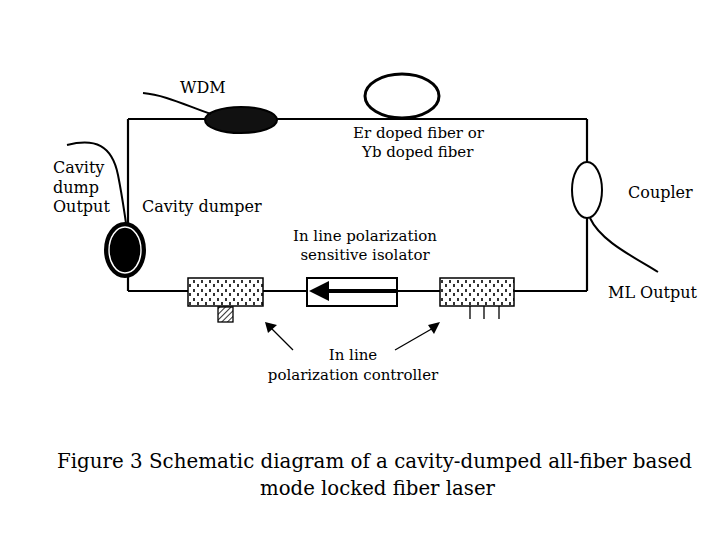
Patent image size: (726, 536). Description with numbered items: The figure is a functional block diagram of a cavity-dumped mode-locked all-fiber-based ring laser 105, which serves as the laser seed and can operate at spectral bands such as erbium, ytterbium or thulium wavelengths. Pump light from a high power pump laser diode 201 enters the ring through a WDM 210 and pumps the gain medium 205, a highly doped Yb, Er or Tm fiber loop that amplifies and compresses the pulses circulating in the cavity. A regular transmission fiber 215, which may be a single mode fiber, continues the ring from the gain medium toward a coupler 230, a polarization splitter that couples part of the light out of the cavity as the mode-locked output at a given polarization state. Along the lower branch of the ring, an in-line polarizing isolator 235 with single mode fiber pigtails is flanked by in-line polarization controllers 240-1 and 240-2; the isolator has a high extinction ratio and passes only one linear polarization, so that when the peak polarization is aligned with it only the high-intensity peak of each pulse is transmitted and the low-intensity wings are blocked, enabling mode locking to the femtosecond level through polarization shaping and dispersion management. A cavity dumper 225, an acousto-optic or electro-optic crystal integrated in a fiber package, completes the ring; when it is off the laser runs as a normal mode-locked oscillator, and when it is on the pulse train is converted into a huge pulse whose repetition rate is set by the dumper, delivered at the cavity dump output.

The cavity-dumped ML laser 105 is at (620, 60).
The high power pump laser diode 201 is at (159, 96).
The gain medium 205 is at (427, 93).
The WDM 210 is at (251, 110).
The regular transmission fiber 215 is at (503, 118).
The cavity dumper 225 is at (136, 258).
The coupler 230 is at (597, 180).
The in-line polarizing isolator 235 is at (330, 306).
The in-line polarization controller 240-1 is at (462, 282).
The in-line polarization controller 240-2 is at (207, 280).